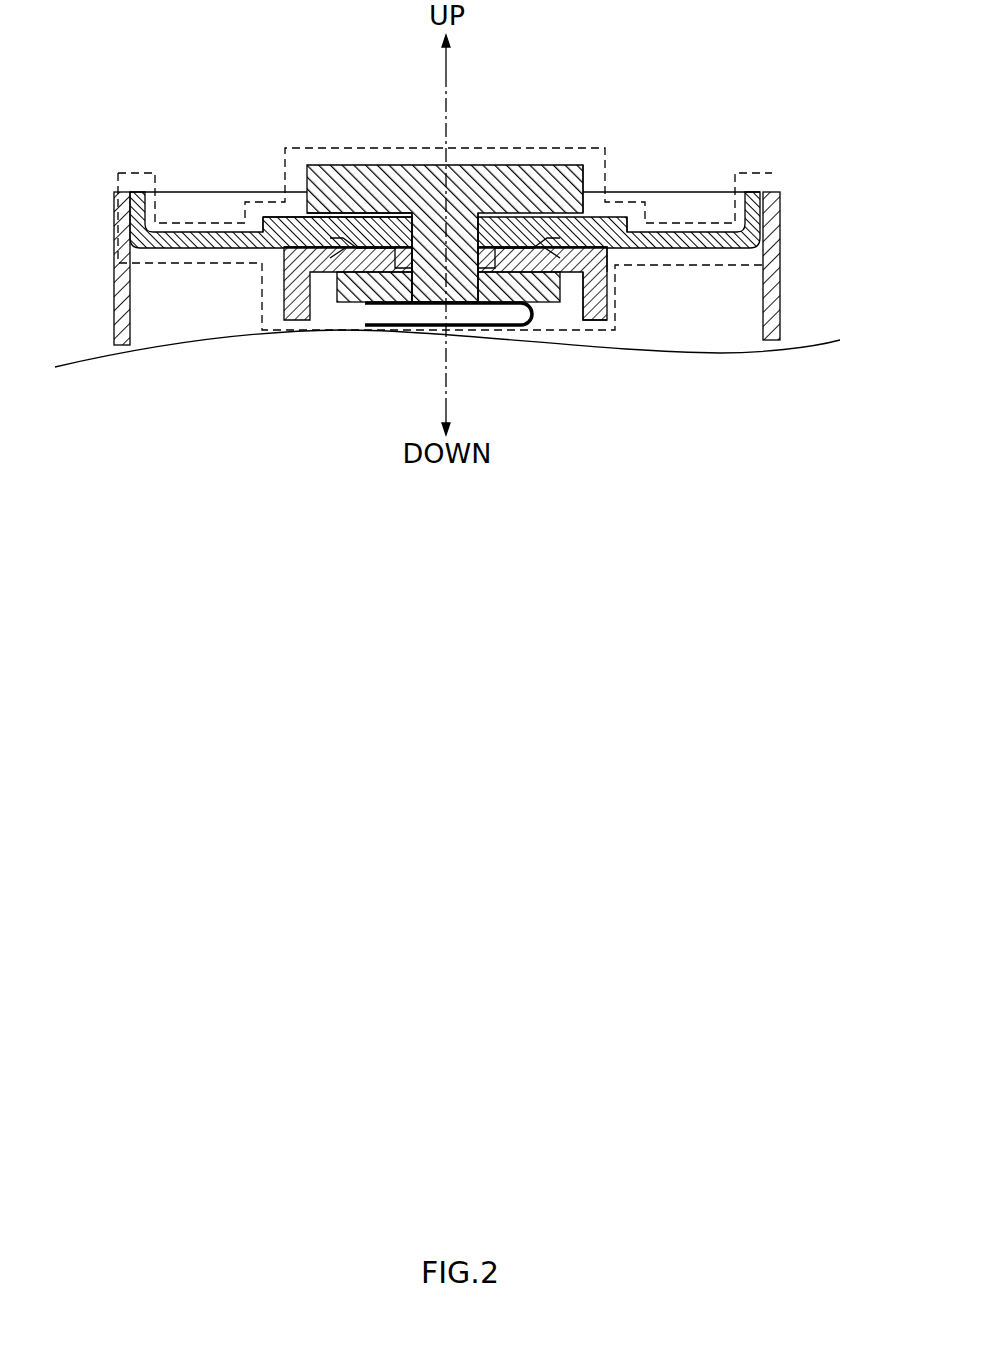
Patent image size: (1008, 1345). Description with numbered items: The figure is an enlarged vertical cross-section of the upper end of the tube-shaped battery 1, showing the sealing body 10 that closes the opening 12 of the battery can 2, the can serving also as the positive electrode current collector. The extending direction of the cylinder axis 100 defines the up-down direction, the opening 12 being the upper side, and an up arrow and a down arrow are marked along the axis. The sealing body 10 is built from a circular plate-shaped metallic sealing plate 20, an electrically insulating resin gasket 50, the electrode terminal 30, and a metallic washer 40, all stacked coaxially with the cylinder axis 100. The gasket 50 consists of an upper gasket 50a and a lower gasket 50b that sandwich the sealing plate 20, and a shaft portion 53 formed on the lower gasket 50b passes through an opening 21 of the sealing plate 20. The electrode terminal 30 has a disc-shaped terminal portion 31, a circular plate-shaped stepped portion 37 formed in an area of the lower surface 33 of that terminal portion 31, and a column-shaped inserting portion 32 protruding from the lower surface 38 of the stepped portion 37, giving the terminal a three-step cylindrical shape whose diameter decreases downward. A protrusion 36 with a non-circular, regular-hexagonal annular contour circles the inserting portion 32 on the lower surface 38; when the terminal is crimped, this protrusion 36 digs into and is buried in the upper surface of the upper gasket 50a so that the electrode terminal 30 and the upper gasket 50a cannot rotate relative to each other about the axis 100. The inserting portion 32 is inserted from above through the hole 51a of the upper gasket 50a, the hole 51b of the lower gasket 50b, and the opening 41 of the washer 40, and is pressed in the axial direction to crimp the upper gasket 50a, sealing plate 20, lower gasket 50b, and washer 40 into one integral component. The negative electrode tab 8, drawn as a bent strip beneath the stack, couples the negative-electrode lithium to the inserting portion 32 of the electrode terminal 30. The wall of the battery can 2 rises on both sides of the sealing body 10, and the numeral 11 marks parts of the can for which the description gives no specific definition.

The tube-shaped battery 1 is at (462, 254).
The battery can 2 is at (462, 226).
The negative electrode tab 8 is at (513, 328).
The sealing body 10 is at (335, 148).
The wall portion 11 is at (119, 187).
The opening 12 is at (185, 212).
The sealing plate 20 is at (445, 277).
The opening of the sealing plate 21 is at (397, 270).
The electrode terminal 30 is at (482, 236).
The terminal portion 31 is at (584, 180).
The inserting portion 32 is at (430, 236).
The lower surface of the terminal portion 33 is at (331, 234).
The protrusion 36 is at (333, 214).
The stepped portion 37 is at (376, 205).
The lower surface of the stepped portion 38 is at (385, 240).
The washer 40 is at (543, 300).
The opening of the washer 41 is at (431, 305).
The gasket 50 is at (530, 337).
The upper gasket 50a is at (620, 248).
The lower gasket 50b is at (600, 320).
The hole of the upper gasket 51a is at (470, 214).
The hole of the lower gasket 51b is at (455, 305).
The shaft portion 53 is at (482, 238).
The cylinder axis 100 is at (443, 88).